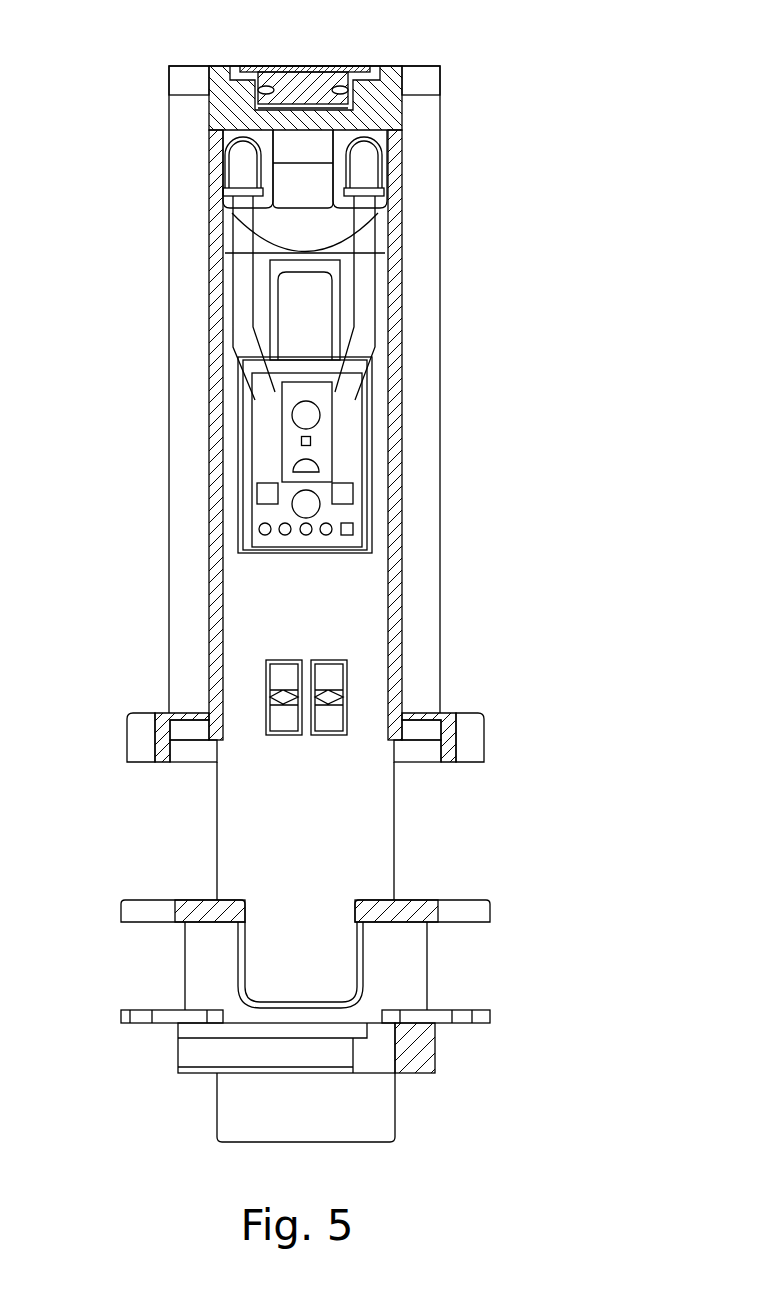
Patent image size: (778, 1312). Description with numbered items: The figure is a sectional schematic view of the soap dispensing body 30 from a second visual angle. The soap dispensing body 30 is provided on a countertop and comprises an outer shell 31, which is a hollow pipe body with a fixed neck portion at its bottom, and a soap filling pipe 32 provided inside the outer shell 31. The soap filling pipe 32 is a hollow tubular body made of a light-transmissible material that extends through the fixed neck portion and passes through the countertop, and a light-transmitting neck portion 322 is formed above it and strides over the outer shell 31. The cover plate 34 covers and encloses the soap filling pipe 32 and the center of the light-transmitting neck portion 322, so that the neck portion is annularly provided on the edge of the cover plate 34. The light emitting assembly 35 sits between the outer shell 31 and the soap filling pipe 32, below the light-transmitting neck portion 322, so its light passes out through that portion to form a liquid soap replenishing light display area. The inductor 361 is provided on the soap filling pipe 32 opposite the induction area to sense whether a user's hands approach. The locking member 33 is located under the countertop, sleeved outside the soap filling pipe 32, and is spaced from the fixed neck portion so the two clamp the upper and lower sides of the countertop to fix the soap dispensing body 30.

The soap dispensing body 30 is at (169, 188).
The outer shell 31 is at (182, 336).
The light-transmitting neck portion 322 is at (420, 81).
The cover plate 34 is at (310, 78).
The light emitting assembly 35 is at (250, 155).
The inductor 361 is at (349, 447).
The soap filling pipe 32 is at (217, 837).
The locking member 33 is at (420, 915).